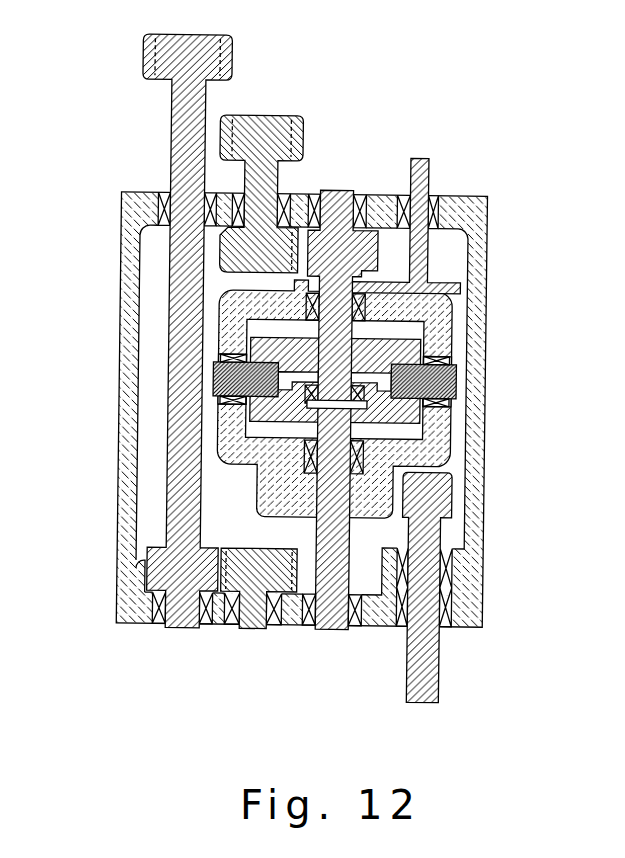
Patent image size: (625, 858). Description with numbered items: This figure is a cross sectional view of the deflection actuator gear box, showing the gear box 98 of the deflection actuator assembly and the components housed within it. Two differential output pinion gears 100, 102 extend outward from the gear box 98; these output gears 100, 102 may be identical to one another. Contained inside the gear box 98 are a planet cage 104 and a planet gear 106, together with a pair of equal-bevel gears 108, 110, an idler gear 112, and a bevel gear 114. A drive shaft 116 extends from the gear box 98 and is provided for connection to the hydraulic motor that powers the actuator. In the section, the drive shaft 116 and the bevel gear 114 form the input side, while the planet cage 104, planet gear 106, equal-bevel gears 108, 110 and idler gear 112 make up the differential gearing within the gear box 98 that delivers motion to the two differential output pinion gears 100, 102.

The gear box 98 is at (486, 271).
The differential output pinion gear 100 is at (259, 135).
The differential output pinion gear 102 is at (161, 60).
The planet cage 104 is at (434, 446).
The planet gear 106 is at (440, 380).
The equal-bevel gear 108 is at (340, 202).
The equal-bevel gear 110 is at (328, 632).
The idler gear 112 is at (246, 628).
The bevel gear 114 is at (420, 176).
The drive shaft 116 is at (445, 666).